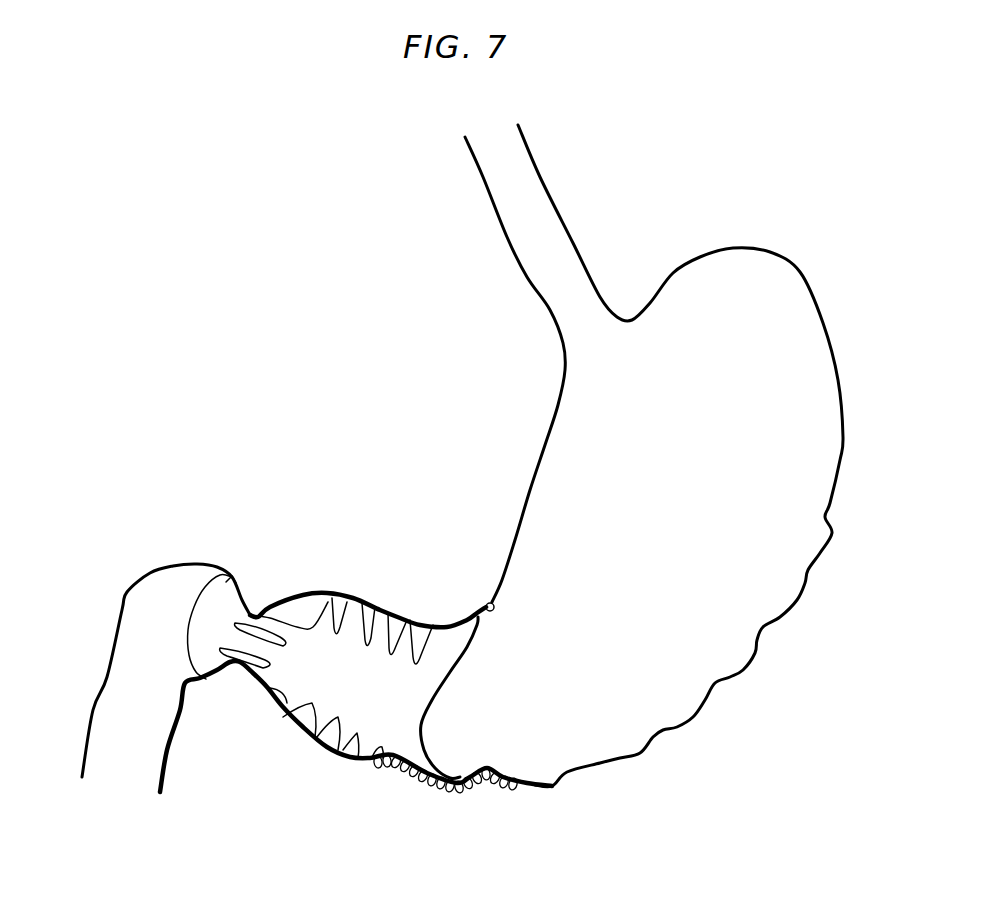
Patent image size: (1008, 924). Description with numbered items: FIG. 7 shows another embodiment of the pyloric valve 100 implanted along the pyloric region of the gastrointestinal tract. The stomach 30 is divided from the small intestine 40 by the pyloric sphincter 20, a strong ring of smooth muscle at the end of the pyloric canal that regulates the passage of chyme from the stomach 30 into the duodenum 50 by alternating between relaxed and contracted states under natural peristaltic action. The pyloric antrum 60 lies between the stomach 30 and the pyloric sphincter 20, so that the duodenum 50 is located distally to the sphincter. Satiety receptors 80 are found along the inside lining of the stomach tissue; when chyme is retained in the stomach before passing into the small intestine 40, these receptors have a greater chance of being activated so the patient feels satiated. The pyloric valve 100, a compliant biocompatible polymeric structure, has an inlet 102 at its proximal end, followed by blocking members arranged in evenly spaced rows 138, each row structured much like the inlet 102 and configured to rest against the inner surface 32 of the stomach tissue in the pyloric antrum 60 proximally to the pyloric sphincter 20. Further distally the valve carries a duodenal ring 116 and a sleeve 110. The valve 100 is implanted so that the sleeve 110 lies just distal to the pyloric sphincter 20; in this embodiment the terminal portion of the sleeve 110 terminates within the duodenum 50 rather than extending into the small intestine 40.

The pyloric sphincter 20 is at (252, 613).
The stomach 30 is at (823, 323).
The inner surface 32 is at (482, 603).
The small intestine 40 is at (108, 670).
The duodenum 50 is at (162, 627).
The pyloric antrum 60 is at (408, 613).
The satiety receptors 80 is at (490, 784).
The pyloric valve 100 is at (357, 574).
The inlet 102 is at (440, 686).
The sleeve 110 is at (197, 593).
The duodenal ring 116 is at (230, 579).
The rows 138 is at (367, 758).